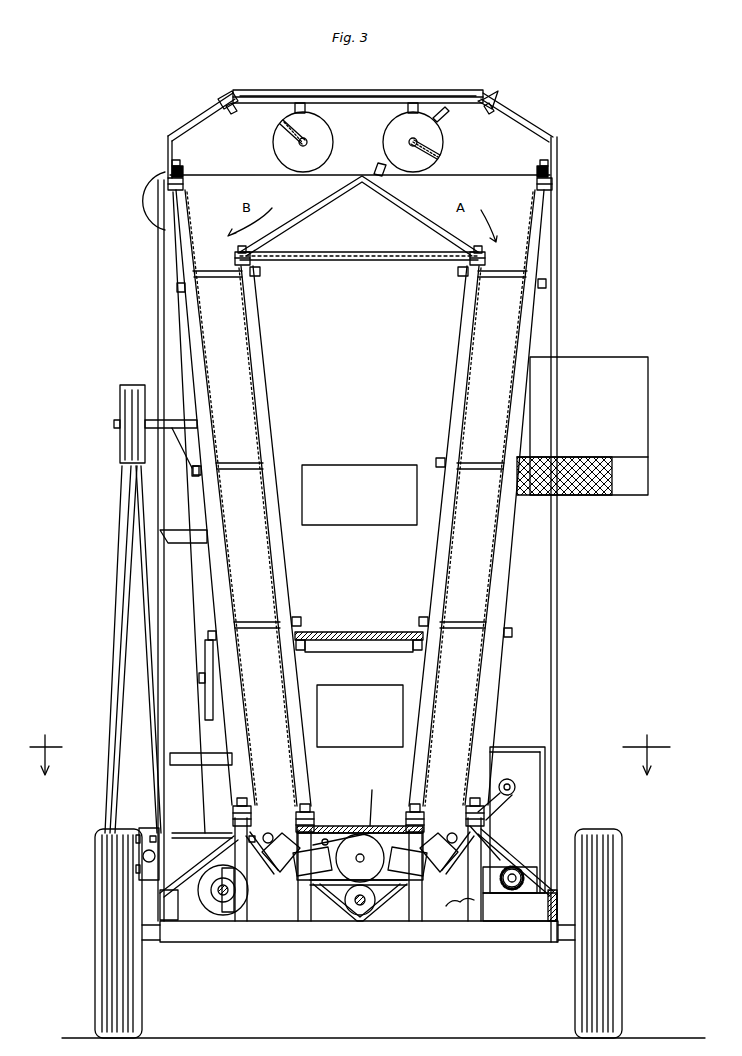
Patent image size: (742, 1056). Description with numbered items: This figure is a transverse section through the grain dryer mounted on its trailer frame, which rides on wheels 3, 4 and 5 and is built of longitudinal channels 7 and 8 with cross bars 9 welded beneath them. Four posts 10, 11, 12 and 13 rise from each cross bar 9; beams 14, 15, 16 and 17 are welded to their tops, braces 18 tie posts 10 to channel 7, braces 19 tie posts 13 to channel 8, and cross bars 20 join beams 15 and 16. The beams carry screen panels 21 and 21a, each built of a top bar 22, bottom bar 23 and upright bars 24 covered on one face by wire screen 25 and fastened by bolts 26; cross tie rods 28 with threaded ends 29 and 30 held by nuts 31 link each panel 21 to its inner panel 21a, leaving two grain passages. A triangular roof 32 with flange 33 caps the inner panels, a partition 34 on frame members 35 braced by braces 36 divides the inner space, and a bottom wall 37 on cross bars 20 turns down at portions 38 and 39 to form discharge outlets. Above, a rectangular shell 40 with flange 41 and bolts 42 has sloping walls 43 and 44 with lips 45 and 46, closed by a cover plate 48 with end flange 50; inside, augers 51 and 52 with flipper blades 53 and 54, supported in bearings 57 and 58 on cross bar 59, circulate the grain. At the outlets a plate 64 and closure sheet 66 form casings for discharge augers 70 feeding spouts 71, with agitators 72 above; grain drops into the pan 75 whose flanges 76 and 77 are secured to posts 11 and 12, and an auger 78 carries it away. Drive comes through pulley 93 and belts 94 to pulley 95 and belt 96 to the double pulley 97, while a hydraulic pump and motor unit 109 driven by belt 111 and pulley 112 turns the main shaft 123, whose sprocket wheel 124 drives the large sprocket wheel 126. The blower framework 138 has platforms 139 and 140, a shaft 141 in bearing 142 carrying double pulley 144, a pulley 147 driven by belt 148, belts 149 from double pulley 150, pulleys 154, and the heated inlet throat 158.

The wheel 3 is at (624, 912).
The wheel 4 is at (343, 751).
The wheel 5 is at (94, 849).
The channel 7 is at (166, 942).
The channel 8 is at (545, 930).
The cross bar 9 is at (288, 942).
The post 10 is at (242, 942).
The post 11 is at (304, 942).
The post 12 is at (404, 942).
The post 13 is at (472, 942).
The beam 14 is at (240, 824).
The beam 15 is at (312, 830).
The beam 16 is at (408, 828).
The beam 17 is at (486, 824).
The brace 18 is at (194, 890).
The brace 19 is at (506, 850).
The cross bar 20 is at (348, 830).
The screen panel 21 is at (166, 267).
The inner screen panel 21a is at (258, 350).
The top bar 22 is at (186, 186).
The bottom bar 23 is at (238, 812).
The upright bar 24 is at (200, 418).
The wire screen 25 is at (200, 350).
The bolt 26 is at (240, 798).
The cross tie rod 28 is at (228, 282).
The reduced threaded end 29 is at (176, 288).
The reduced threaded end 30 is at (262, 272).
The nut 31 is at (178, 292).
The triangular roof 32 is at (392, 197).
The flange 33 is at (240, 257).
The partition 34 is at (364, 630).
The frame member 35 is at (300, 650).
The brace 36 is at (372, 652).
The bottom wall 37 is at (370, 800).
The bottom wall portion 38 is at (288, 842).
The bottom wall portion 39 is at (436, 830).
The rectangular shell 40 is at (351, 141).
The flange 41 is at (186, 160).
The bolt 42 is at (186, 169).
The wall 43 is at (197, 118).
The wall 44 is at (527, 123).
The down turned lip 45 is at (236, 106).
The down turned lip 46 is at (486, 107).
The cover plate 48 is at (226, 96).
The upturned end flange 50 is at (282, 86).
The auger 51 is at (276, 154).
The auger 52 is at (446, 166).
The flipper blade 53 is at (374, 168).
The flipper blade 54 is at (442, 126).
The bearing 57 is at (303, 102).
The bearing 58 is at (420, 104).
The cross bar 59 is at (358, 90).
The sheet metal plate 64 is at (254, 834).
The closure sheet 66 is at (478, 848).
The auger 70 is at (278, 866).
The discharge spout 71 is at (358, 862).
The agitator 72 is at (452, 822).
The pan 75 is at (380, 920).
The side flange 76 is at (310, 886).
The side flange 77 is at (410, 886).
The auger 78 is at (352, 892).
The pulley 93 is at (360, 858).
The belt 94 is at (341, 844).
The pulley 95 is at (210, 908).
The belt 96 is at (160, 352).
The pulley 97 is at (152, 192).
The hydraulic pump and motor unit 109 is at (517, 820).
The belt 111 is at (500, 804).
The pulley 112 is at (516, 789).
The main shaft 123 is at (508, 890).
The sprocket wheel 124 is at (514, 890).
The large sprocket wheel 126 is at (453, 911).
The framework 138 is at (162, 707).
The platform 139 is at (190, 545).
The platform 140 is at (172, 752).
The extended shaft 141 is at (114, 424).
The bearing 142 is at (162, 400).
The double pulley 144 is at (118, 390).
The pulley 147 is at (212, 722).
The belt 148 is at (214, 660).
The belt 149 is at (125, 474).
The double pulley 150 is at (140, 832).
The pulley 154 is at (154, 834).
The inlet throat 158 is at (582, 426).